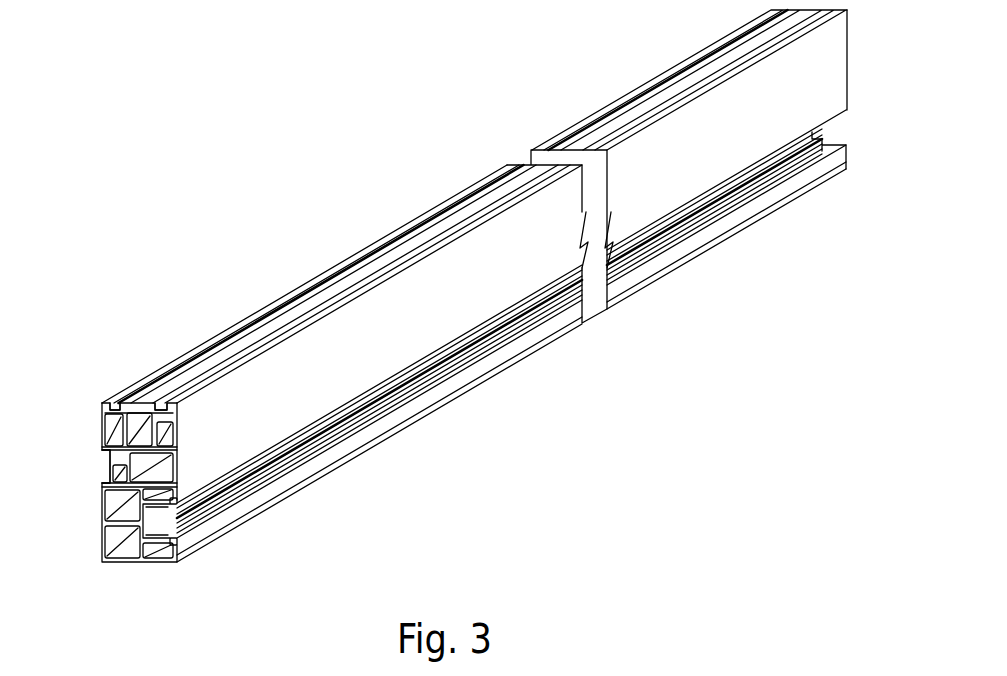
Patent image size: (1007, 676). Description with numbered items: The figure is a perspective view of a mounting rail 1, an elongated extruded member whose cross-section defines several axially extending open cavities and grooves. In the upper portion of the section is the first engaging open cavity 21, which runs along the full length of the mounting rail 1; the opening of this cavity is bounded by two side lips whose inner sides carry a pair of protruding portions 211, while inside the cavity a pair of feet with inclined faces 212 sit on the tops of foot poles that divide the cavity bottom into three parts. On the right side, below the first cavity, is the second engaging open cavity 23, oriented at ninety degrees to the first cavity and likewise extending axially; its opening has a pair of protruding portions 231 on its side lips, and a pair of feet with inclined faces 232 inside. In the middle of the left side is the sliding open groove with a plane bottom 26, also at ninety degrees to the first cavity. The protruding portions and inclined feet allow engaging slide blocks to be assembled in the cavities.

The mounting rail 1 is at (265, 415).
The first engaging open cavity 21 is at (144, 405).
The protruding portions 211 is at (163, 407).
The feet with inclined faces 212 is at (152, 427).
The sliding open groove with a plane bottom 26 is at (108, 465).
The second engaging open cavity 23 is at (166, 513).
The protruding portions 231 is at (172, 543).
The feet with inclined faces 232 is at (157, 540).